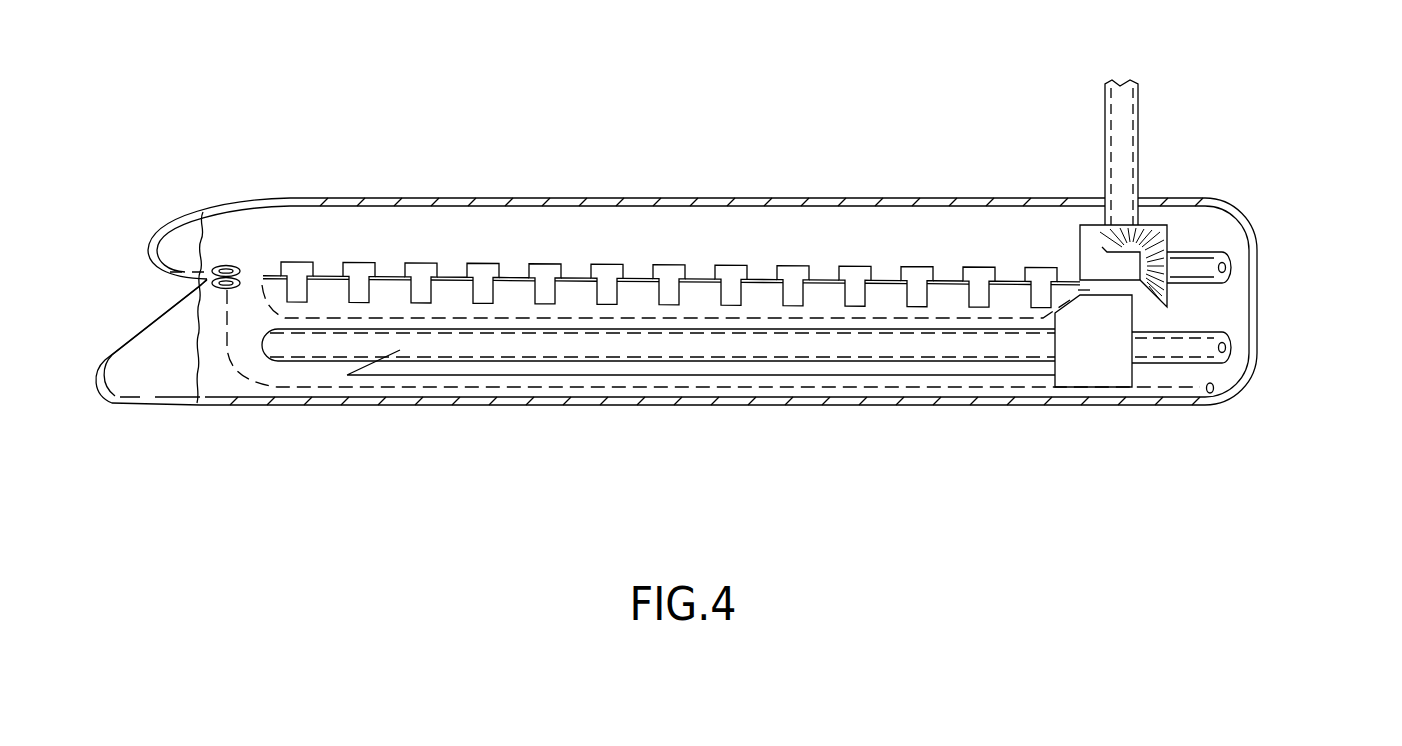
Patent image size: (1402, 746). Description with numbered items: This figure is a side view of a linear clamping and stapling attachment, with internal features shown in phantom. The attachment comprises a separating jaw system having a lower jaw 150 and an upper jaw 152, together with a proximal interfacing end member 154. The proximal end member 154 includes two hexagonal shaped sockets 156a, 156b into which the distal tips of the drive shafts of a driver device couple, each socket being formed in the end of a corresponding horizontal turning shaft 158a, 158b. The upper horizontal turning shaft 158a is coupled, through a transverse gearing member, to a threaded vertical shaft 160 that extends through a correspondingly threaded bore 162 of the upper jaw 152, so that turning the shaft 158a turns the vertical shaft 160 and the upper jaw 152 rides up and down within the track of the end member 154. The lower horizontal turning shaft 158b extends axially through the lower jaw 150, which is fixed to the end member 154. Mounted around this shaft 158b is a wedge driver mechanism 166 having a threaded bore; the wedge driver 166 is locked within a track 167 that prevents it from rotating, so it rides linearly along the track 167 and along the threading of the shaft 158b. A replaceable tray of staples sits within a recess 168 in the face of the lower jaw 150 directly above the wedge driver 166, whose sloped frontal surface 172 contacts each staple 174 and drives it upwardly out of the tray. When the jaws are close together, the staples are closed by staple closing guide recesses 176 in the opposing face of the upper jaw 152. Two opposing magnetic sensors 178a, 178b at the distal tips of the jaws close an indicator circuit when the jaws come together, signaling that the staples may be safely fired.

The lower jaw 150 is at (150, 382).
The upper jaw 152 is at (563, 178).
The proximal interfacing end member 154 is at (1218, 223).
The hexagonal shaped socket 156a is at (1232, 266).
The hexagonal shaped socket 156b is at (1232, 347).
The upper horizontal turning shaft 158a is at (1190, 252).
The lower horizontal turning shaft 158b is at (1160, 365).
The threaded vertical shaft 160 is at (1105, 98).
The threaded bore 162 is at (1077, 236).
The wedge driver mechanism 166 is at (1168, 237).
The track 167 is at (400, 352).
The recess 168 is at (207, 280).
The sloped frontal surface 172 is at (1067, 302).
The staple 174 is at (367, 293).
The staple closing guide recesses 176 is at (288, 262).
The magnetic sensor 178a is at (224, 265).
The magnetic sensor 178b is at (212, 284).